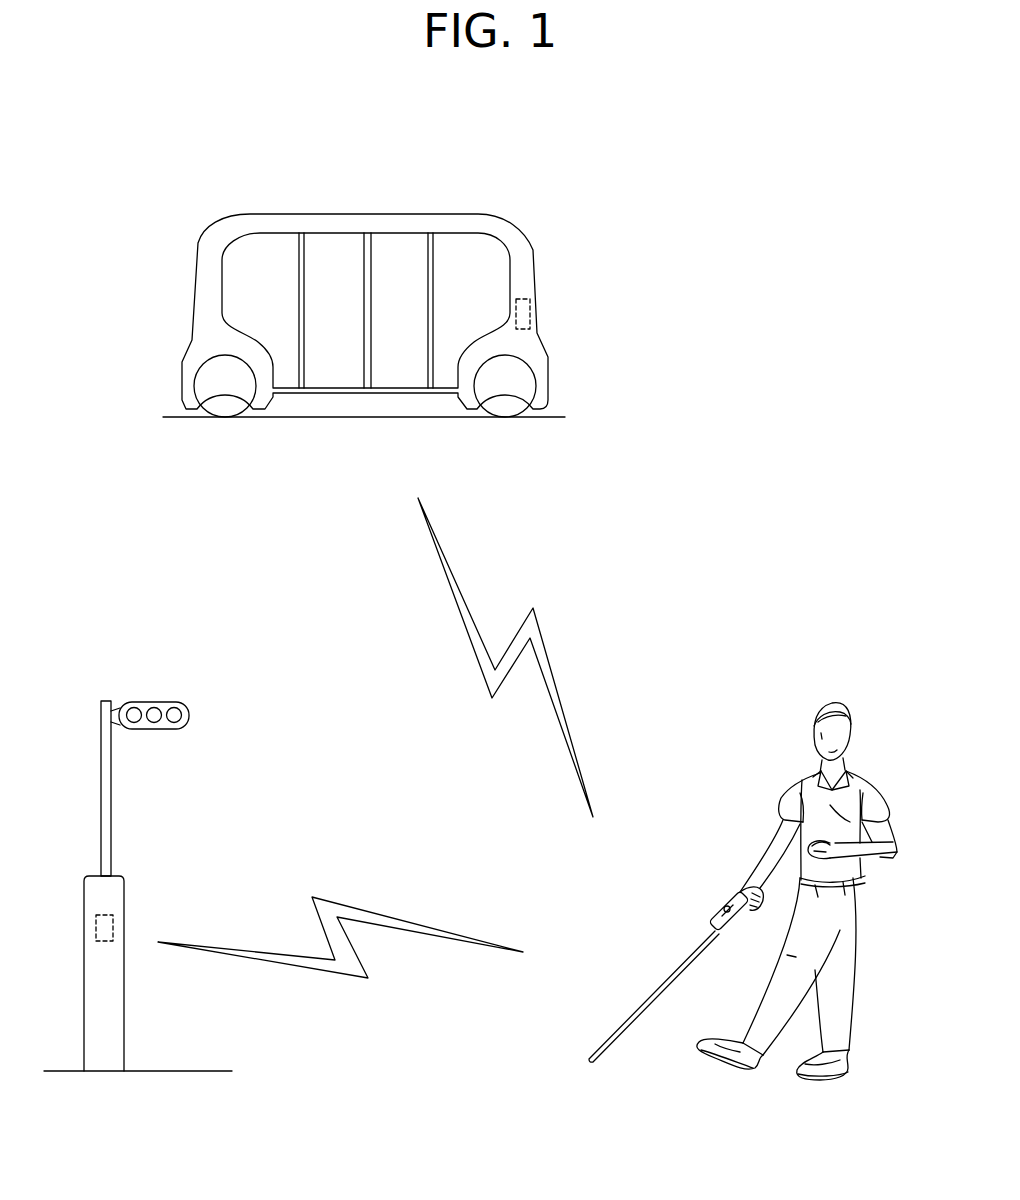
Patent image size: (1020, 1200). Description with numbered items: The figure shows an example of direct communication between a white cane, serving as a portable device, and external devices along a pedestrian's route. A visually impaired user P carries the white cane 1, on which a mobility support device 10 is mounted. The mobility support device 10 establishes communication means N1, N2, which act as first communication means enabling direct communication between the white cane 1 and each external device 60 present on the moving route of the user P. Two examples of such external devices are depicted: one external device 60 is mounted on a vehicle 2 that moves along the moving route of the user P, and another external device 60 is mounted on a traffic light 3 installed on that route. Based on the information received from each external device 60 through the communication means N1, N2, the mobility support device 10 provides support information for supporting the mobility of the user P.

The white cane 1 is at (648, 945).
The vehicle 2 is at (345, 213).
The traffic light 3 is at (157, 699).
The mobility support device 10 is at (730, 890).
The external device 60 is at (532, 305).
The communication means N1 is at (542, 635).
The communication means N2 is at (349, 898).
The user P is at (878, 765).